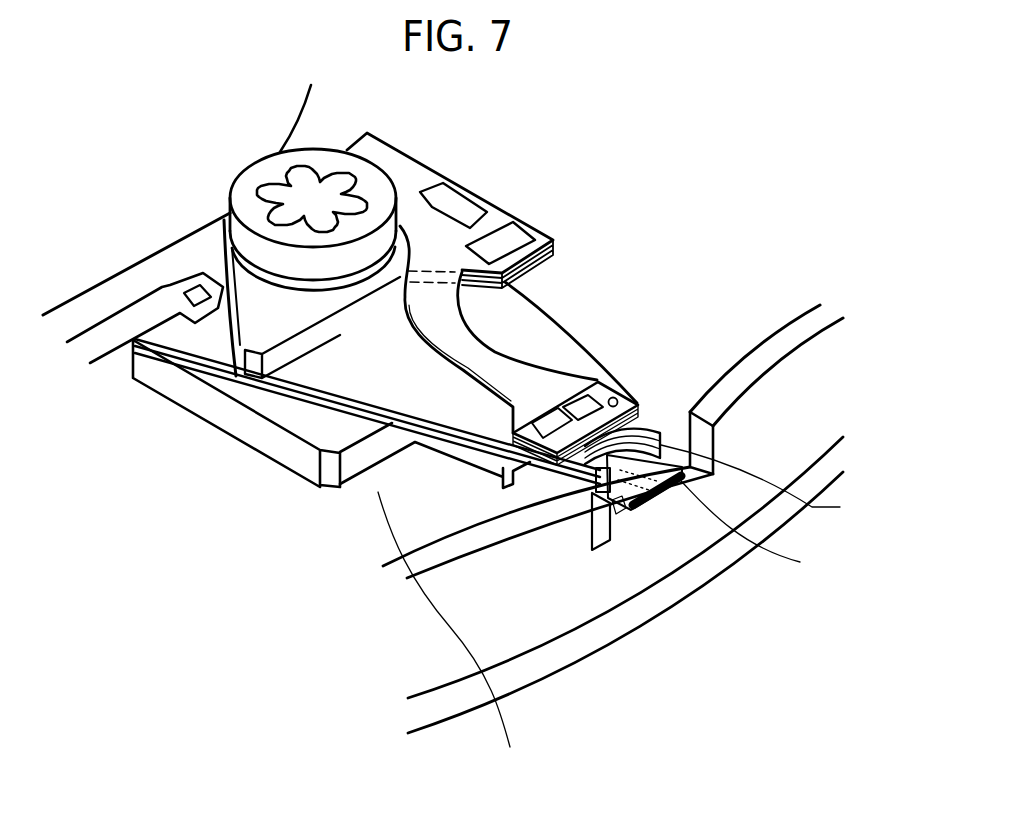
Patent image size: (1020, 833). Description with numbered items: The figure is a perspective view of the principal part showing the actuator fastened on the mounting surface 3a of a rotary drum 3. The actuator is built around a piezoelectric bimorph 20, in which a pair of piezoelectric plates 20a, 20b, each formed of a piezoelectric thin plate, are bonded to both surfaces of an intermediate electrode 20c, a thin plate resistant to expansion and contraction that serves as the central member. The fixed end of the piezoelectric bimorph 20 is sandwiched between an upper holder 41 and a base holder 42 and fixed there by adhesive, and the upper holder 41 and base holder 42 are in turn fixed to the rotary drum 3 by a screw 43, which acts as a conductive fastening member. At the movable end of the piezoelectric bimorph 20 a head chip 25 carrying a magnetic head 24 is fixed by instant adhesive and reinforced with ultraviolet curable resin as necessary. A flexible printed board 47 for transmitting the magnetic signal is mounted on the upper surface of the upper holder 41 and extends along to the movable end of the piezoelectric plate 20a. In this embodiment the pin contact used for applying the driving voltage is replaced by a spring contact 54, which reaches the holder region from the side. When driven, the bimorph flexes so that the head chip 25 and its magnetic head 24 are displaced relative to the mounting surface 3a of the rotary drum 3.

The rotary drum 3 is at (674, 608).
The mounting surface 3a is at (453, 638).
The piezoelectric bimorph 20 is at (576, 334).
The piezoelectric plate 20a is at (660, 432).
The piezoelectric plate 20b is at (763, 530).
The intermediate electrode 20c is at (771, 483).
The magnetic head 24 is at (693, 513).
The head chip 25 is at (609, 515).
The upper holder 41 is at (243, 292).
The base holder 42 is at (187, 392).
The screw 43 is at (263, 168).
The flexible printed board 47 is at (497, 214).
The spring contact 54 is at (130, 310).